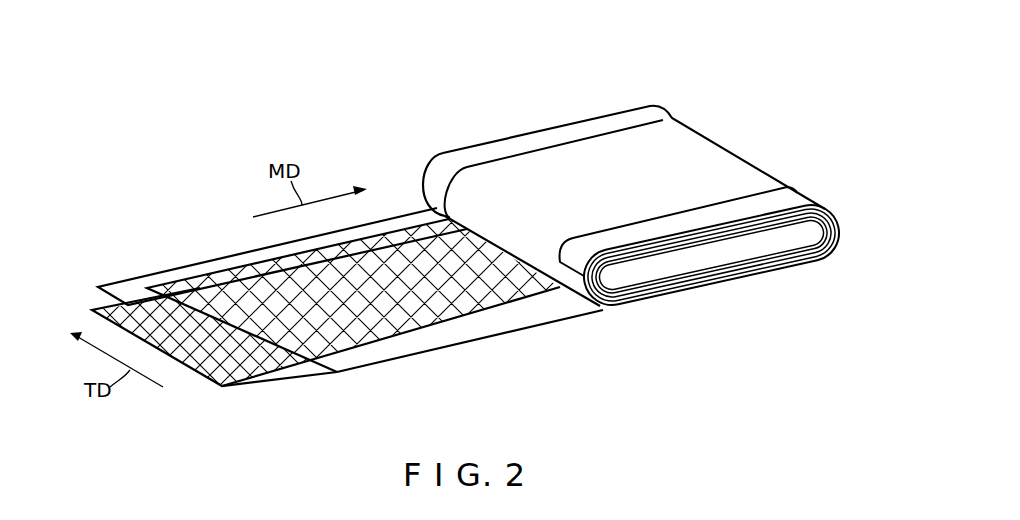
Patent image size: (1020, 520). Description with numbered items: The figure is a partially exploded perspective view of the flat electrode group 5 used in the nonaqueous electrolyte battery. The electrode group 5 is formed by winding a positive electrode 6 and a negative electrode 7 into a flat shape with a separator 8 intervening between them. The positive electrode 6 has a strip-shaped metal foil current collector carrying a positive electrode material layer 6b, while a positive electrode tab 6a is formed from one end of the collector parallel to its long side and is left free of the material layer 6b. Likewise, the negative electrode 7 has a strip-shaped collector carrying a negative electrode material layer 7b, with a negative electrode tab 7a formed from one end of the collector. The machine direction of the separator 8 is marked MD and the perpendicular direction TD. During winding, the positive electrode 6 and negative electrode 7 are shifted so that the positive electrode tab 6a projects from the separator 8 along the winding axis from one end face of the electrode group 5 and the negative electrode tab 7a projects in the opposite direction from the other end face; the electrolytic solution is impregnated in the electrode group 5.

The flat electrode group 5 is at (523, 108).
The positive electrode 6 is at (199, 258).
The positive electrode tab 6a is at (603, 124).
The positive electrode material layer 6b is at (157, 307).
The negative electrode 7 is at (524, 340).
The negative electrode tab 7a is at (782, 200).
The negative electrode material layer 7b is at (412, 320).
The separator 8 is at (299, 363).